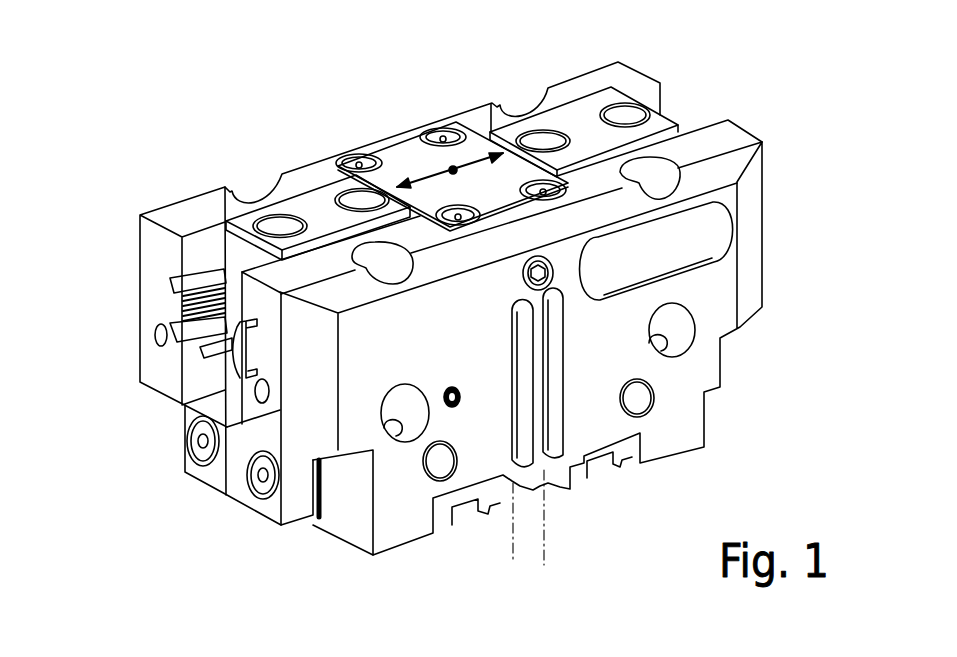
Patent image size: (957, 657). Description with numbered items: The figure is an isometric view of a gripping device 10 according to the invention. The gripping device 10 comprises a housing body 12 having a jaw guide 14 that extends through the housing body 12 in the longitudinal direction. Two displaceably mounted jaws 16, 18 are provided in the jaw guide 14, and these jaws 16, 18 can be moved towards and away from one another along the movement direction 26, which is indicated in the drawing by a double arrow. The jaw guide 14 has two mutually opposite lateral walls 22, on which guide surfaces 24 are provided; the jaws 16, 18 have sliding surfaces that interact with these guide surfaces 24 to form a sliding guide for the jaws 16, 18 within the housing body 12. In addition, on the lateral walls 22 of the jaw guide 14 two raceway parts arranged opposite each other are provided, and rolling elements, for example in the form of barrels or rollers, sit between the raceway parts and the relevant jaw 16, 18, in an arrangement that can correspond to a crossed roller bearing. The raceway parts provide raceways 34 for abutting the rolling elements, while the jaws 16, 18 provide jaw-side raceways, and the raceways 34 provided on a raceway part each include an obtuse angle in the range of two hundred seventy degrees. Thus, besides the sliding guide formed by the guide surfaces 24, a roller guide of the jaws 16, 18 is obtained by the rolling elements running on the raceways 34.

The gripping device 10 is at (461, 291).
The housing body 12 is at (717, 138).
The jaw guide 14 is at (200, 325).
The jaw 16 is at (313, 212).
The jaw 18 is at (582, 125).
The lateral wall 22 is at (191, 254).
The guide surface 24 is at (172, 276).
The movement direction 26 is at (453, 168).
The raceway 34 is at (240, 334).